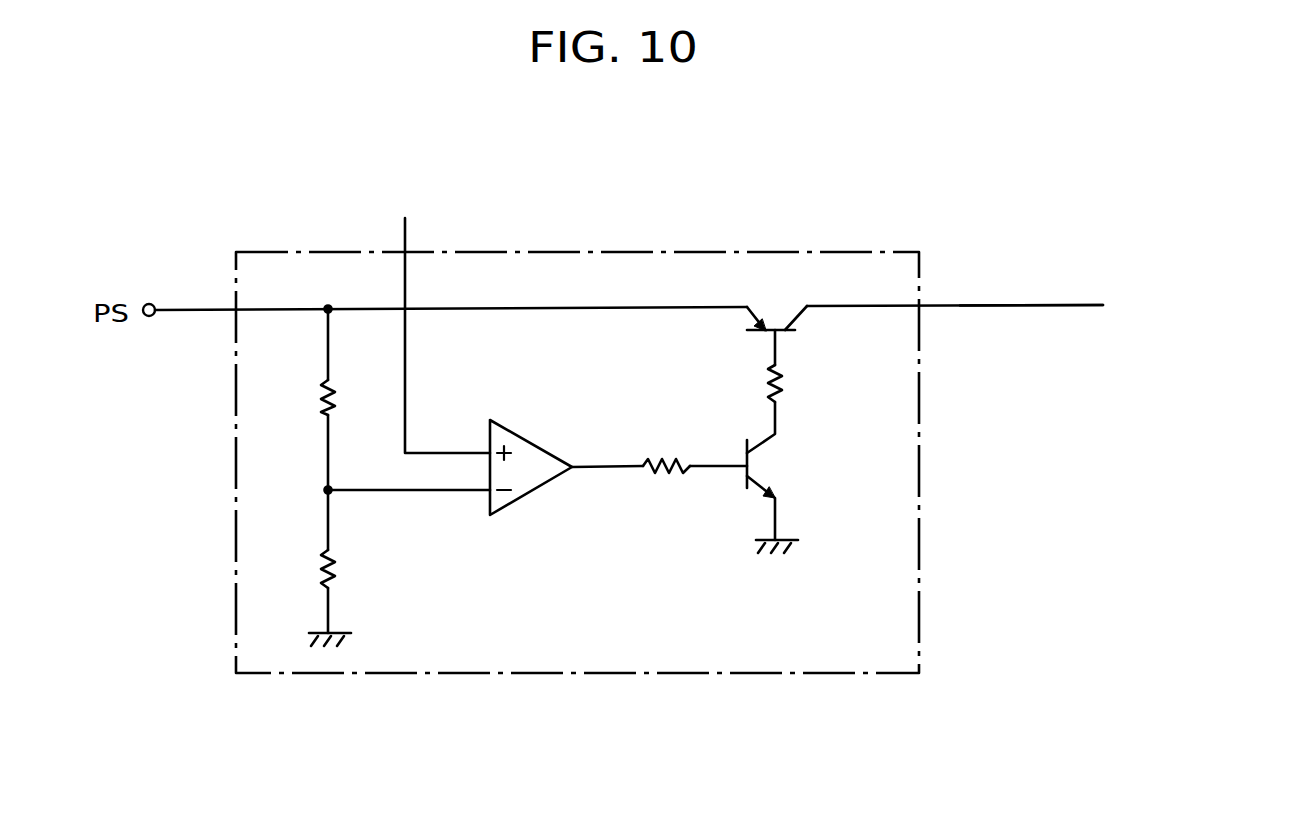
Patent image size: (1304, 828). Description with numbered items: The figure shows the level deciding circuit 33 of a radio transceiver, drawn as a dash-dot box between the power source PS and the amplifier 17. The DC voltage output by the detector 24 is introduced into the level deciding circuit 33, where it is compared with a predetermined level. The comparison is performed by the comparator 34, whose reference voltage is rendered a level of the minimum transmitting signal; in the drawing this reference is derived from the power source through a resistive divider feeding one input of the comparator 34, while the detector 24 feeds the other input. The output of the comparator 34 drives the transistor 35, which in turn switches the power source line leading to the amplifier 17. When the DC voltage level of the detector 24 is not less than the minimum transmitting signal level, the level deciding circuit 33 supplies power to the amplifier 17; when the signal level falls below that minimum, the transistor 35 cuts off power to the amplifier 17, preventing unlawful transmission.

The level deciding circuit 33 is at (830, 252).
The comparator 34 is at (547, 448).
The transistor 35 is at (762, 466).
The detector 24 is at (412, 319).
The amplifier 17 is at (1127, 305).